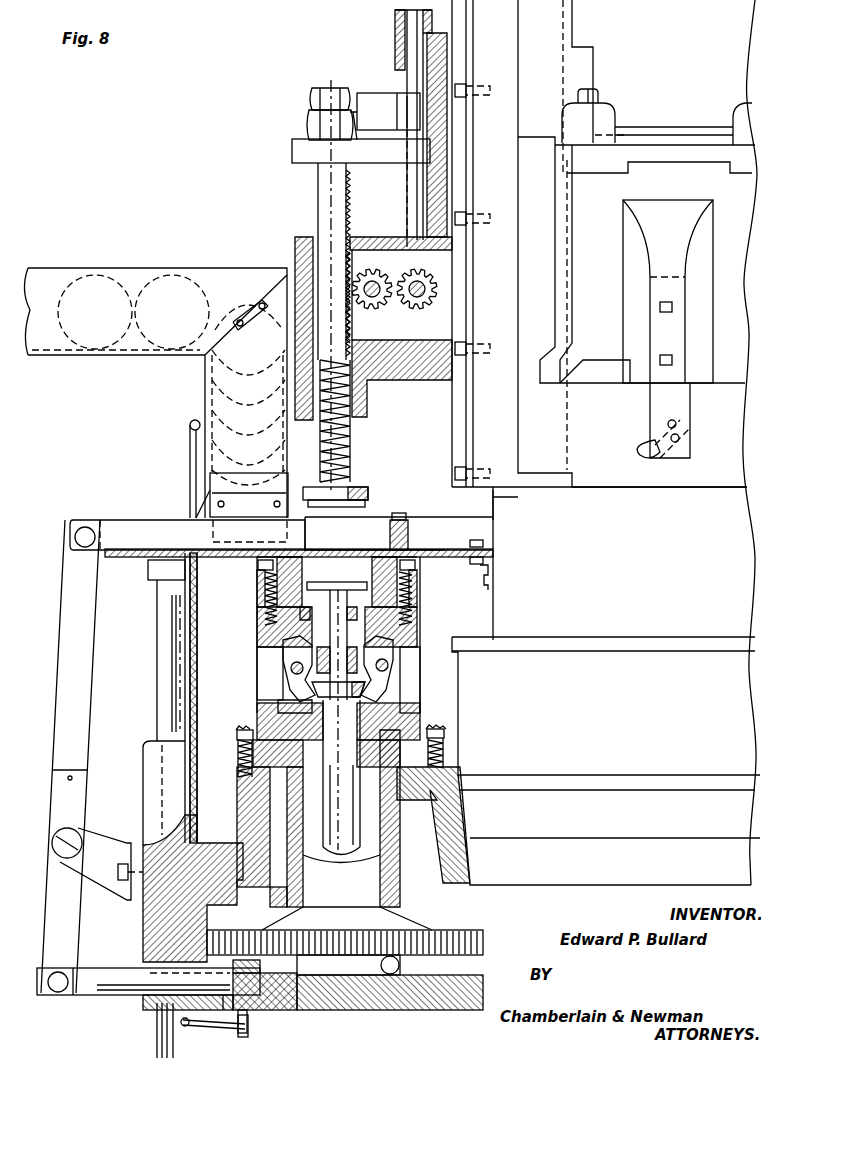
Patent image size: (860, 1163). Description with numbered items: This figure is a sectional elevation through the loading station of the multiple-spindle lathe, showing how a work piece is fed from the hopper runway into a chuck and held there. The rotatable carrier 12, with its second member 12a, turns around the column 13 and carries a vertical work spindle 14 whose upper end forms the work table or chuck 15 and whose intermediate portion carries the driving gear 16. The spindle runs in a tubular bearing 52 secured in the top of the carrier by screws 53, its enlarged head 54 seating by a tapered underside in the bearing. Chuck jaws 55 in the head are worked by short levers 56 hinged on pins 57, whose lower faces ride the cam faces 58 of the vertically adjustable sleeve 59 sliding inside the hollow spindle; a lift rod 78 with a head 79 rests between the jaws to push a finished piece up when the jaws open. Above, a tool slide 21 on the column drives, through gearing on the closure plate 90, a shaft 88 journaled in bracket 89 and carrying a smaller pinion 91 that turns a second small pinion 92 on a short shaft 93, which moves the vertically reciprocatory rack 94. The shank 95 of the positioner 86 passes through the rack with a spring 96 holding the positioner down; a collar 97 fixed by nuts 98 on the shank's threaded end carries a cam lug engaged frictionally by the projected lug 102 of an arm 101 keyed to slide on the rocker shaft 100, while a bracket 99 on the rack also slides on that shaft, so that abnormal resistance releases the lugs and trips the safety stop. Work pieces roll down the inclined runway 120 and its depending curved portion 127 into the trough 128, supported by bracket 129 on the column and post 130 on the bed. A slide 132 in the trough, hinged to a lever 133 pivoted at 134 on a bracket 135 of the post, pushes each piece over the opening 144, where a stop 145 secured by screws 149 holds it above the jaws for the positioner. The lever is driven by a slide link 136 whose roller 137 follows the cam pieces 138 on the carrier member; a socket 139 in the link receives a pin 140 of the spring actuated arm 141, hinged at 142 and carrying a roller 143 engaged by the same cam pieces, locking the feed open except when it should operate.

The rotatable carrier 12 is at (537, 840).
The second carrier member 12a is at (468, 1001).
The column 13 is at (500, 500).
The work spindle 14 is at (378, 886).
The work table or chuck 15 is at (418, 630).
The gear 16 is at (483, 936).
The tool slide 21 is at (731, 378).
The tubular bearing 52 is at (446, 750).
The screw 53 is at (443, 733).
The enlarged head 54 is at (262, 718).
The chuck jaws 55 is at (417, 580).
The lever 56 is at (285, 656).
The pin 57 is at (292, 670).
The cam face 58 is at (368, 692).
The vertically adjustable sleeve 59 is at (410, 706).
The lift rod 78 is at (419, 600).
The head 79 is at (338, 582).
The positioner 86 is at (368, 491).
The shaft 88 is at (415, 300).
The bracket 89 is at (408, 376).
The closure plate 90 is at (456, 395).
The smaller pinion 91 is at (434, 292).
The second small pinion 92 is at (387, 272).
The short shaft 93 is at (373, 298).
The vertically reciprocatory rack 94 is at (350, 228).
The shank 95 is at (350, 433).
The spring 96 is at (350, 455).
The collar 97 is at (308, 110).
The nuts 98 is at (342, 95).
The bracket 99 is at (300, 152).
The rocker shaft 100 is at (410, 180).
The arm 101 is at (380, 100).
The projected lug 102 is at (368, 137).
The inclined runway 120 is at (118, 278).
The depending curved portion 127 is at (213, 437).
The trough 128 is at (222, 556).
The bracket 129 is at (488, 590).
The post 130 is at (156, 623).
The slide 132 is at (143, 525).
The lever 133 is at (62, 640).
The pivot 134 is at (80, 835).
The bracket 135 is at (102, 877).
The slide link 136 is at (108, 968).
The roller 137 is at (316, 964).
The cam pieces 138 is at (298, 1008).
The socket 139 is at (140, 998).
The pin 140 is at (213, 1034).
The spring actuated arm 141 is at (243, 1039).
The hinge 142 is at (170, 1036).
The roller 143 is at (248, 1030).
The opening 144 is at (360, 547).
The stop 145 is at (410, 528).
The screws 149 is at (402, 520).